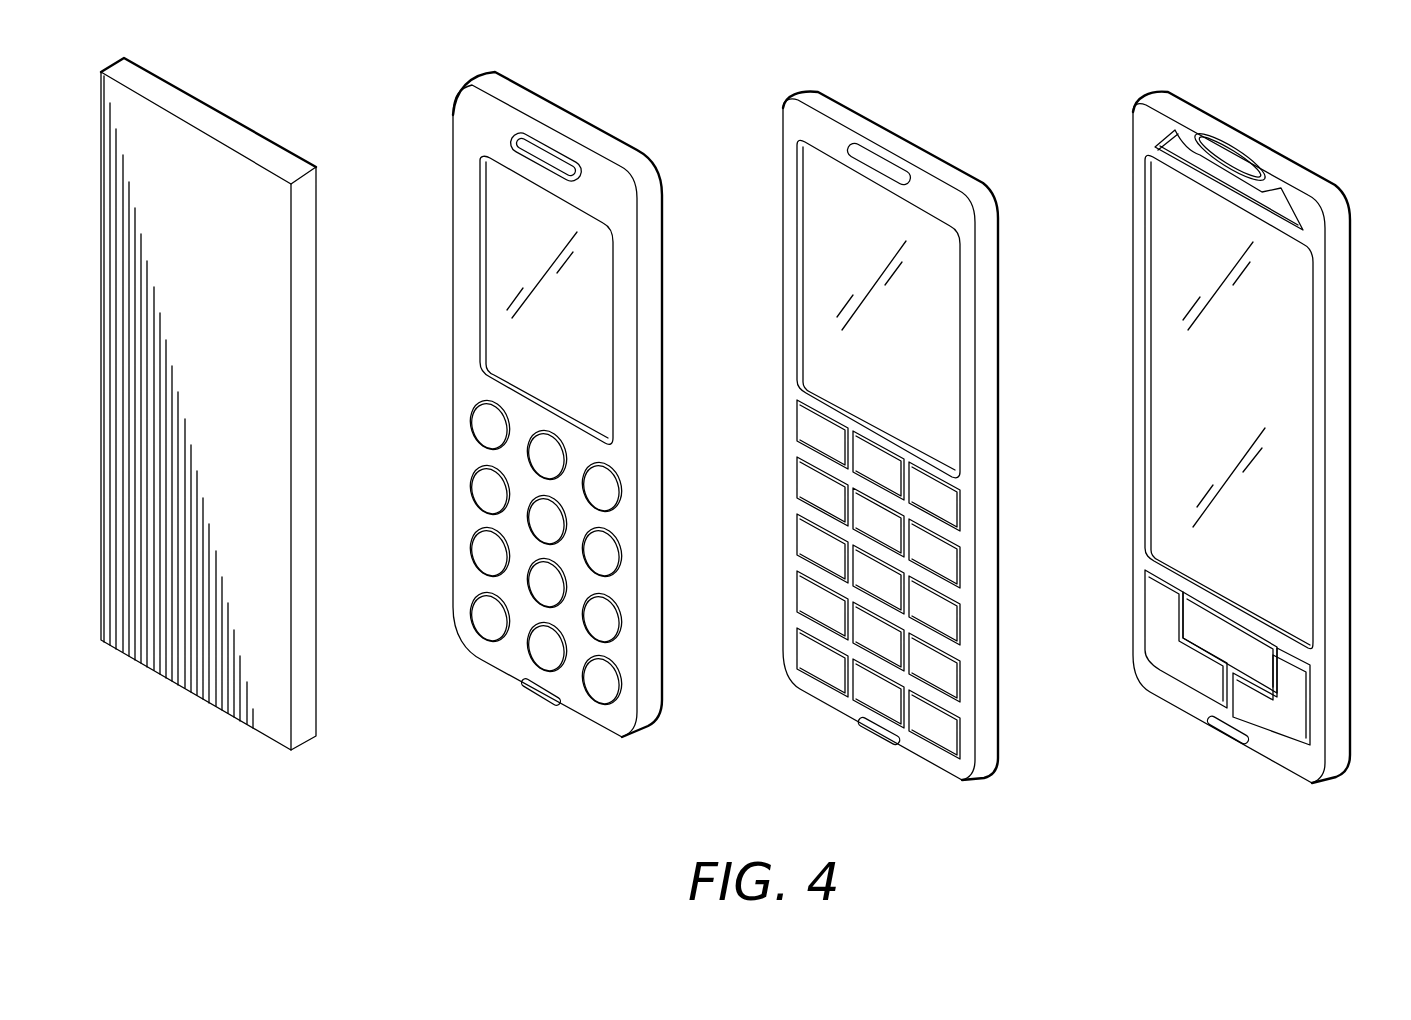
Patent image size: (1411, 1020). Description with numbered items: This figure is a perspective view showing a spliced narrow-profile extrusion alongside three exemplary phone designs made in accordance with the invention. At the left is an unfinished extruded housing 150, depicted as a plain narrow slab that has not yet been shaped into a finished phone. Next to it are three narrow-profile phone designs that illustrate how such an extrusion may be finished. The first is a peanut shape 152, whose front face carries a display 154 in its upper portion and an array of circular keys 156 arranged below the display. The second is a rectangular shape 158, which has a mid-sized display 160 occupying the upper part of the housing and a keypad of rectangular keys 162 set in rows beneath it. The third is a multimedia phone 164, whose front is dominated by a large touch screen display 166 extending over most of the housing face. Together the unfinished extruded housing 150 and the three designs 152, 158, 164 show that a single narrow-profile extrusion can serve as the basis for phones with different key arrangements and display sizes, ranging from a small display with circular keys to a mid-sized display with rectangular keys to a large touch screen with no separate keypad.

The unfinished extruded housing 150 is at (272, 241).
The peanut shape 152 is at (625, 222).
The display 154 is at (595, 340).
The circular keys 156 is at (602, 487).
The rectangular shape 158 is at (963, 230).
The mid-sized display 160 is at (935, 355).
The rectangular keys 162 is at (940, 505).
The multimedia phone 164 is at (1312, 236).
The large touch screen display 166 is at (1282, 362).